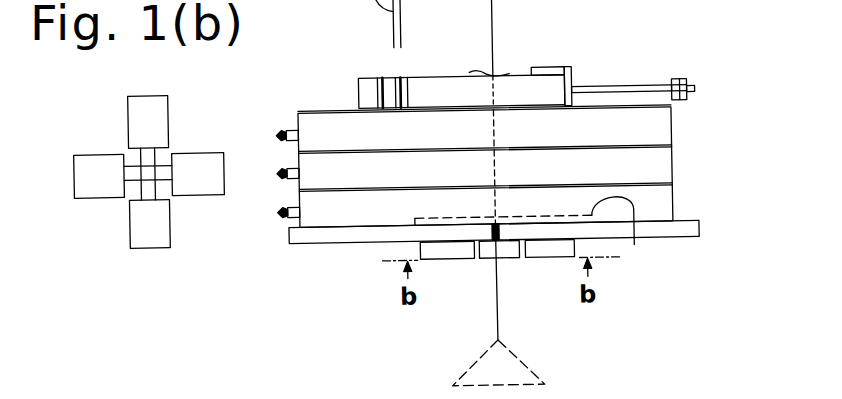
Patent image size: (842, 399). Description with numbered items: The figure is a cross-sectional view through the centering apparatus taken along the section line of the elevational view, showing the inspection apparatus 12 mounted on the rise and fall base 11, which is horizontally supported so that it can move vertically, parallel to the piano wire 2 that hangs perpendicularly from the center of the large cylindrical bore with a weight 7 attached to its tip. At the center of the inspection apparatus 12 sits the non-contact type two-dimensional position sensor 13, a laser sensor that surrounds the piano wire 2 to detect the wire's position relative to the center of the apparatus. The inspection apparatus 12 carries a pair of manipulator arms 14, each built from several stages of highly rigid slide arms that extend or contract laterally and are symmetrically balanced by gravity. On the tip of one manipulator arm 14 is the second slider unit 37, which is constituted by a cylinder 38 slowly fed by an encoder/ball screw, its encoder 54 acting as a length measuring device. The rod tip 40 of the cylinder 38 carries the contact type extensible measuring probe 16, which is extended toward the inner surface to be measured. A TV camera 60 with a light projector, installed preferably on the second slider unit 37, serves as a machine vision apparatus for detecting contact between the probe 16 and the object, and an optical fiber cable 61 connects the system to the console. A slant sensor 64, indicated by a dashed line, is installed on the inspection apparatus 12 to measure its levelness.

The piano wire 2 is at (462, 0).
The weight 7 is at (508, 368).
The rise and fall base 11 is at (691, 232).
The inspection apparatus 12 is at (680, 196).
The non-contact type two-dimensional position sensor 13 is at (108, 120).
The manipulator arms 14 is at (273, 166).
The contact type extensible measuring probe 16 is at (700, 86).
The second slider unit 37 is at (360, 68).
The cylinder 38 is at (573, 87).
The rod tip 40 is at (671, 83).
The encoder 54 is at (359, 98).
The TV camera 60 is at (549, 69).
The optical fiber cable 61 is at (488, 70).
The slant sensor 64 is at (535, 238).